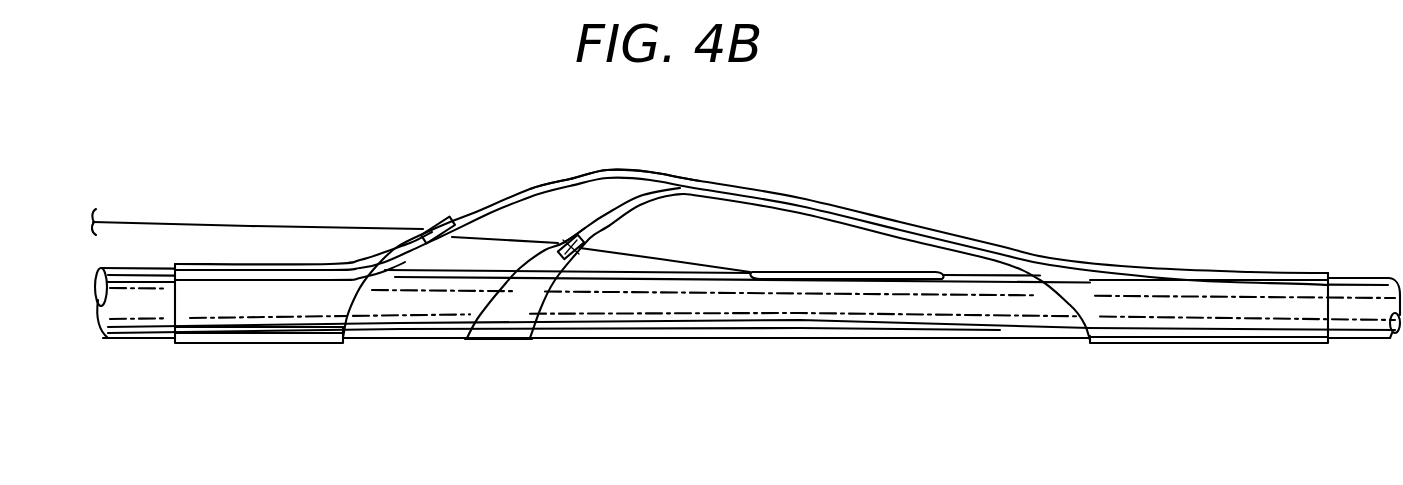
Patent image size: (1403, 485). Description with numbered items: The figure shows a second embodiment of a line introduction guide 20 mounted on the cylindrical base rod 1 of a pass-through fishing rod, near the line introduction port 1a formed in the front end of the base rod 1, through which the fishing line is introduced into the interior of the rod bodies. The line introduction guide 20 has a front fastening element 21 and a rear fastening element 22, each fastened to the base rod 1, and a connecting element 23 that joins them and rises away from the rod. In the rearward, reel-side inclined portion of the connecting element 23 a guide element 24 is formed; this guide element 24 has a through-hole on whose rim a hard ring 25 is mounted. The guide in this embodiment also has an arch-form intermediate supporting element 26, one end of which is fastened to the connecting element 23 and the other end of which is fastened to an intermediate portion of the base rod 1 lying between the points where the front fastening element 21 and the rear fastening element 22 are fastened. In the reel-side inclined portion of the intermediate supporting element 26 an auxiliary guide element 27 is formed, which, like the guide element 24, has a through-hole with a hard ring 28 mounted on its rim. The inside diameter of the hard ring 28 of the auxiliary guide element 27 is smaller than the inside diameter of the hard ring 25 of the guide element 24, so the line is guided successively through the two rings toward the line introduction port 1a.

The base rod 1 is at (697, 318).
The line introduction port 1a is at (905, 268).
The line introduction guide 20 is at (703, 172).
The front fastening element 21 is at (1157, 318).
The rear fastening element 22 is at (253, 333).
The connecting element 23 is at (596, 168).
The guide element 24 is at (439, 216).
The hard ring 25 is at (423, 229).
The intermediate supporting element 26 is at (510, 315).
The auxiliary guide element 27 is at (560, 236).
The hard ring 28 is at (575, 222).